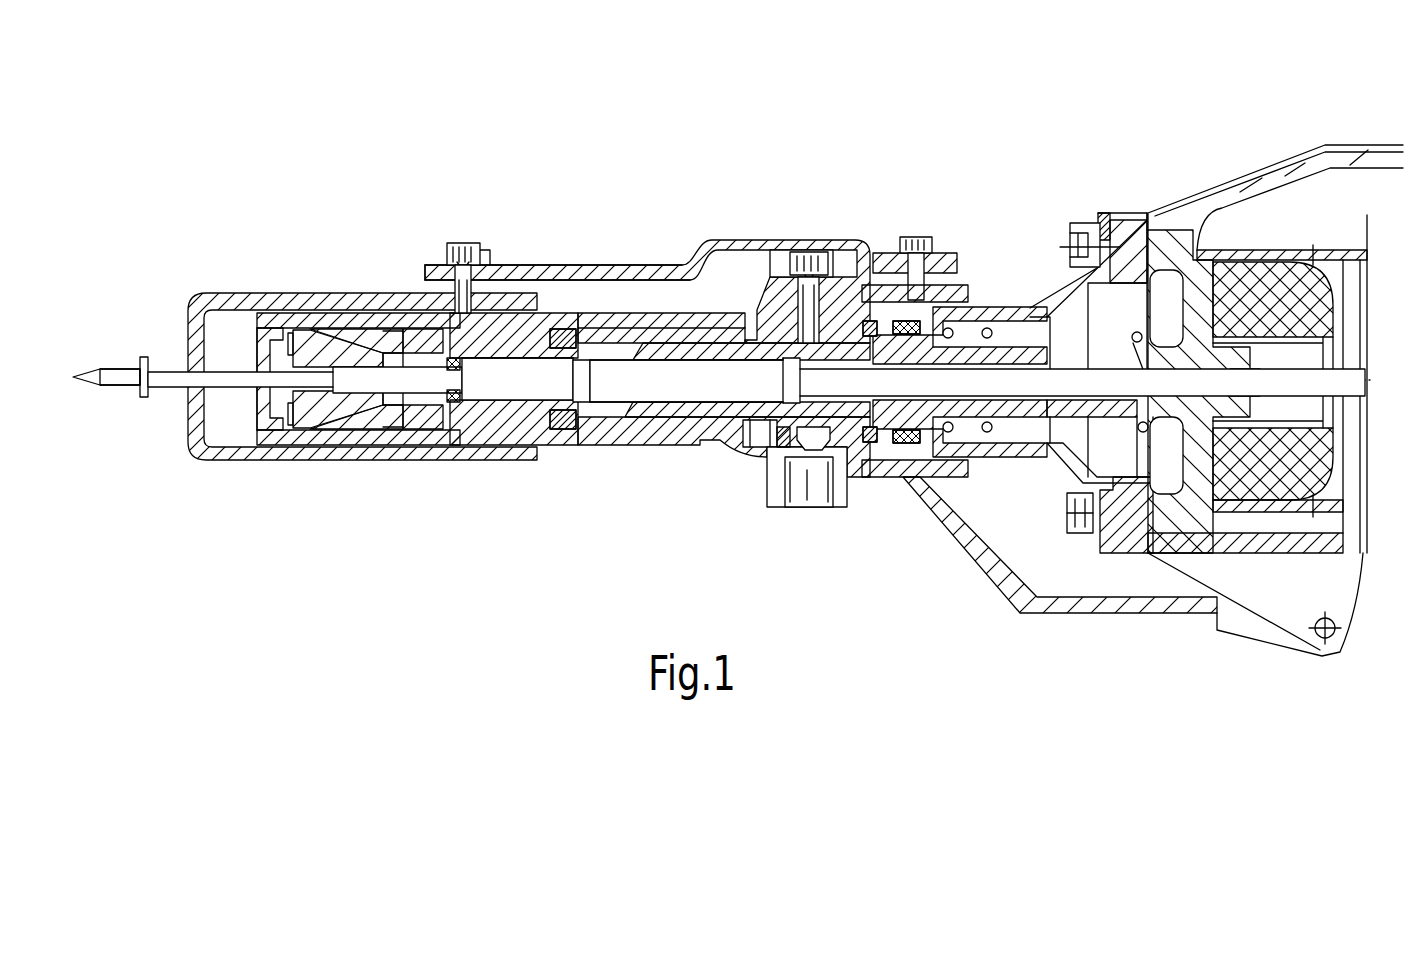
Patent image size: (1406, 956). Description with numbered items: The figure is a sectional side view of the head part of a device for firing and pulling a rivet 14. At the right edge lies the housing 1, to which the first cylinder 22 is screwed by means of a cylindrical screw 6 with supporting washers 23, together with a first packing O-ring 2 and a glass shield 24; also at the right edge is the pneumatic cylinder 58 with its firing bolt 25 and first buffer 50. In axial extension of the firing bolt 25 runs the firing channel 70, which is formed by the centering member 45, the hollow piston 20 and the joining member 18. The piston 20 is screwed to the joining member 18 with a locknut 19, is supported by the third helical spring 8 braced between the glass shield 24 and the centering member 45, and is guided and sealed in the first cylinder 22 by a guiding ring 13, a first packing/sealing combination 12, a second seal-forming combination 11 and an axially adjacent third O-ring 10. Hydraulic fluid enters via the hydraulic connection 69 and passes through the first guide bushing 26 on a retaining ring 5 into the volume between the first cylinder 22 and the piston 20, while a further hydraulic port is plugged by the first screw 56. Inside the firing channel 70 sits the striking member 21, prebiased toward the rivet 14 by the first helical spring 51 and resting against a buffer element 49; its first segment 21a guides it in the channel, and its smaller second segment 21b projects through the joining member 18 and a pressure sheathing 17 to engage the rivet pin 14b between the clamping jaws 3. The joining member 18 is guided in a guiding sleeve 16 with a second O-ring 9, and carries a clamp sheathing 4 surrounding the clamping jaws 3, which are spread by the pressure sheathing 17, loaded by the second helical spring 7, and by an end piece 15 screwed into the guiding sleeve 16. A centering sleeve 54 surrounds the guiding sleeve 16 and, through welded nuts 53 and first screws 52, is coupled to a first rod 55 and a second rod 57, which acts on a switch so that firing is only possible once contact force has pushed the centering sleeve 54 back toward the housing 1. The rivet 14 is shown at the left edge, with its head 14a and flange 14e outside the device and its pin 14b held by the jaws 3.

The housing 1 is at (1340, 163).
The first packing O-ring 2 is at (1198, 248).
The clamping jaws 3 is at (343, 430).
The clamp sheathing 4 is at (385, 428).
The retaining ring 5 is at (850, 433).
The cylindrical screw 6 is at (1088, 221).
The second helical spring 7 is at (365, 328).
The third helical spring 8 is at (1005, 306).
The second O-ring 9 is at (477, 428).
The third O-ring 10 is at (753, 425).
The second seal-forming combination 11 is at (780, 437).
The first packing/sealing combination 12 is at (862, 330).
The guiding ring 13 is at (900, 441).
The rivet 14 is at (122, 350).
The mandrel head 14a is at (122, 386).
The rivet pin 14b is at (170, 388).
The mandrel flange 14e is at (146, 360).
The end piece 15 is at (268, 440).
The guiding jacket or sleeve 16 is at (312, 435).
The pressure sheathing 17 is at (392, 313).
The joining member 18 is at (512, 425).
The locknut 19 is at (565, 425).
The hollow piston 20 is at (642, 412).
The striking member 21 is at (493, 398).
The first segment 21a is at (517, 365).
The second segment 21b is at (425, 428).
The first cylinder 22 is at (707, 330).
The supporting disks or washers 23 is at (1110, 213).
The glass shield 24 is at (1170, 280).
The firing bolt 25 is at (1270, 373).
The first guide bushing 26 is at (828, 432).
The centering member 45 is at (1040, 300).
The buffer element 49 is at (455, 428).
The first buffer 50 is at (1242, 283).
The first helical spring 51 is at (597, 378).
The first screws 52 is at (451, 243).
The nut 53 is at (487, 265).
The centering sleeve 54 is at (318, 296).
The first rod 55 is at (643, 266).
The first screw 56 is at (808, 250).
The second rod 57 is at (975, 330).
The pneumatic cylinder 58 is at (1366, 300).
The hydraulic connection 69 is at (813, 487).
The firing channel 70 is at (657, 413).